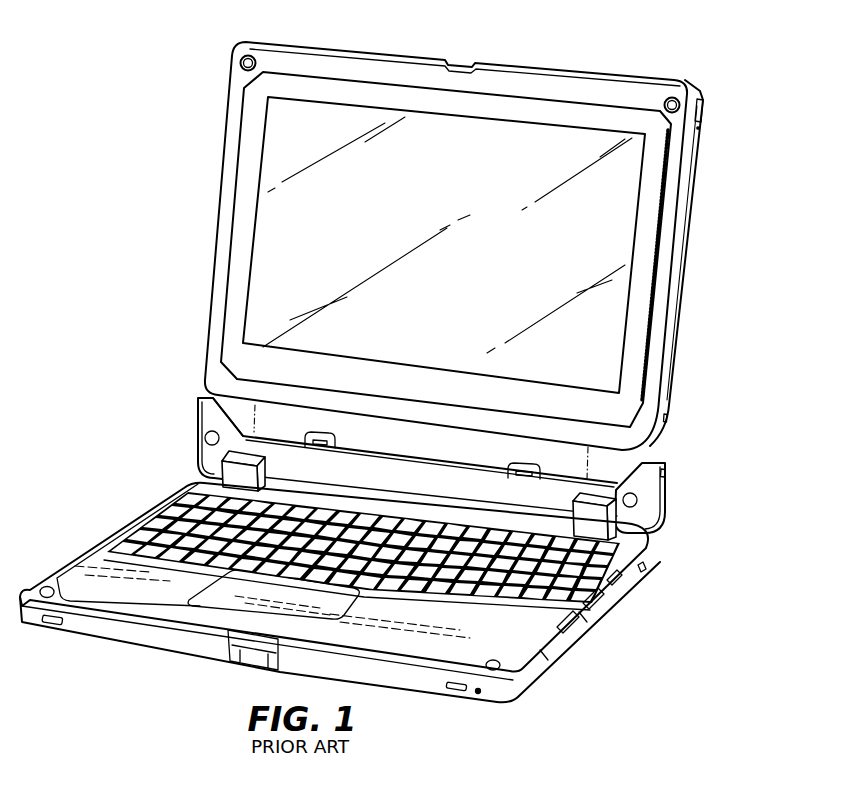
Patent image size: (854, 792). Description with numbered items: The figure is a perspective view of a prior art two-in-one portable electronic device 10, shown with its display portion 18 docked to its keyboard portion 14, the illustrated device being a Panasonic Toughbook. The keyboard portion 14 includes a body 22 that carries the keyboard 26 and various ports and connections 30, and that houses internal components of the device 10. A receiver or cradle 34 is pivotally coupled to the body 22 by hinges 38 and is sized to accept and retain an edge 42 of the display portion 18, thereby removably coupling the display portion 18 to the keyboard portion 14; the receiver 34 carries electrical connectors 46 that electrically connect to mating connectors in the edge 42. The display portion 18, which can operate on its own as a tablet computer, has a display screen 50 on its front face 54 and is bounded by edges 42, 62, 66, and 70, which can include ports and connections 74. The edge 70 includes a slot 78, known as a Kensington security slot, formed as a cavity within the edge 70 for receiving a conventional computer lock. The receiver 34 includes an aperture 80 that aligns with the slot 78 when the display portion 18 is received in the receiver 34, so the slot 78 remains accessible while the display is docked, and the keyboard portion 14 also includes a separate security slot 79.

The portable electronic device 10 is at (750, 182).
The keyboard portion 14 is at (80, 558).
The display portion 18 is at (232, 143).
The body 22 is at (117, 630).
The keyboard 26 is at (162, 505).
The ports and connections 30 is at (578, 646).
The receiver 34 is at (664, 495).
The hinges 38 is at (617, 537).
The edge 42 is at (432, 428).
The electrical connectors 46 is at (322, 432).
The display screen 50 is at (283, 211).
The front face 54 is at (232, 335).
The edge 62 is at (507, 60).
The edge 66 is at (227, 100).
The edge 70 is at (688, 213).
The ports and connections 74 is at (704, 110).
The slot 78 is at (670, 418).
The security slot 79 is at (650, 571).
The aperture 80 is at (665, 473).